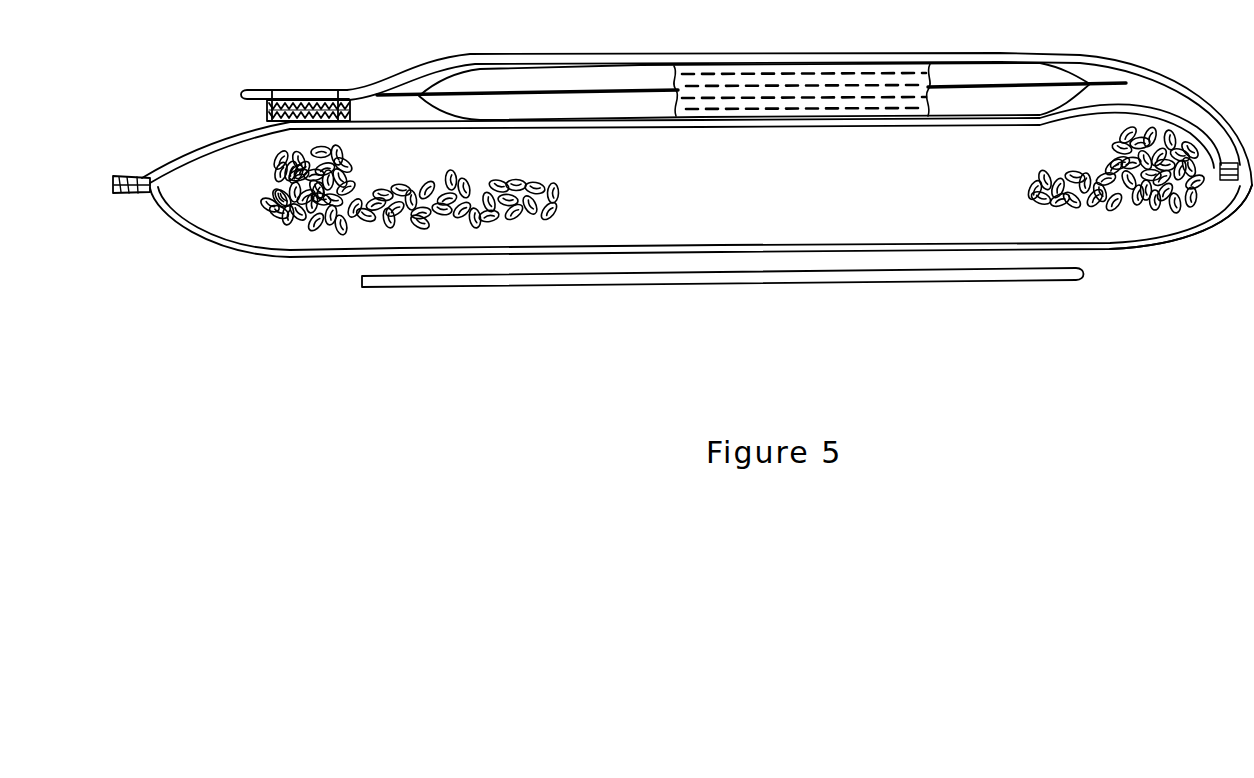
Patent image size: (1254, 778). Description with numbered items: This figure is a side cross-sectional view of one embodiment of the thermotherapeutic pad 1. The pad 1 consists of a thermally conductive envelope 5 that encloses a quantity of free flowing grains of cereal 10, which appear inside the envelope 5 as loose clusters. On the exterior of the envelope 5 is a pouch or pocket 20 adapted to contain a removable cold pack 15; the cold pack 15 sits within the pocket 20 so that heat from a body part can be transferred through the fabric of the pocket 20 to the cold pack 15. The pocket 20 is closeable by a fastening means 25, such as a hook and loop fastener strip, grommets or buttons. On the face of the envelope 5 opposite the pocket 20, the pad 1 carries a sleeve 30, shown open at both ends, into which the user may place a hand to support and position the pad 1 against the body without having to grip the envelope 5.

The thermotherapeutic pad 1 is at (191, 277).
The envelope 5 is at (1108, 262).
The grains of cereal 10 is at (606, 203).
The cold pack 15 is at (600, 119).
The pocket 20 is at (382, 68).
The fastening means 25 is at (312, 77).
The sleeve 30 is at (434, 299).